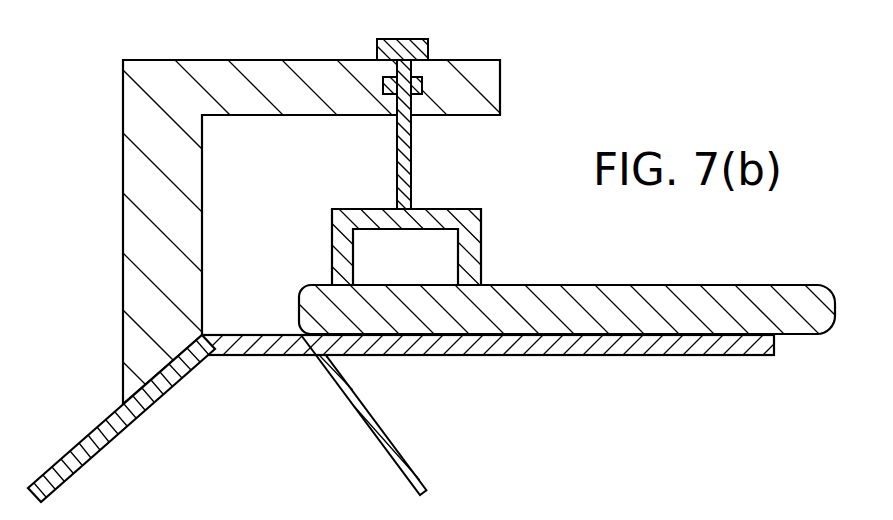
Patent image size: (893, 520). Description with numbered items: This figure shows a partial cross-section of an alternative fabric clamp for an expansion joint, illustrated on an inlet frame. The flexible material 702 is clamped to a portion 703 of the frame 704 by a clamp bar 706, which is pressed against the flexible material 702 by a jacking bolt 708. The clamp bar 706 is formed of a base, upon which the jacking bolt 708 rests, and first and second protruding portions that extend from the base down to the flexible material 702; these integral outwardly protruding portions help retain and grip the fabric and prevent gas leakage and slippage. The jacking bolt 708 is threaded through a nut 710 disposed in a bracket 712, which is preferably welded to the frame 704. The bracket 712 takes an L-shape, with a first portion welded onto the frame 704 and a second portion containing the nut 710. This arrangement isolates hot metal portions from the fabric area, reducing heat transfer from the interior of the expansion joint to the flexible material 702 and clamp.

The flexible material 702 is at (627, 284).
The portion of frame 703 is at (530, 355).
The frame 704 is at (84, 416).
The clamp bar 706 is at (445, 209).
The jacking bolt 708 is at (412, 151).
The nut 710 is at (383, 82).
The bracket 712 is at (261, 60).